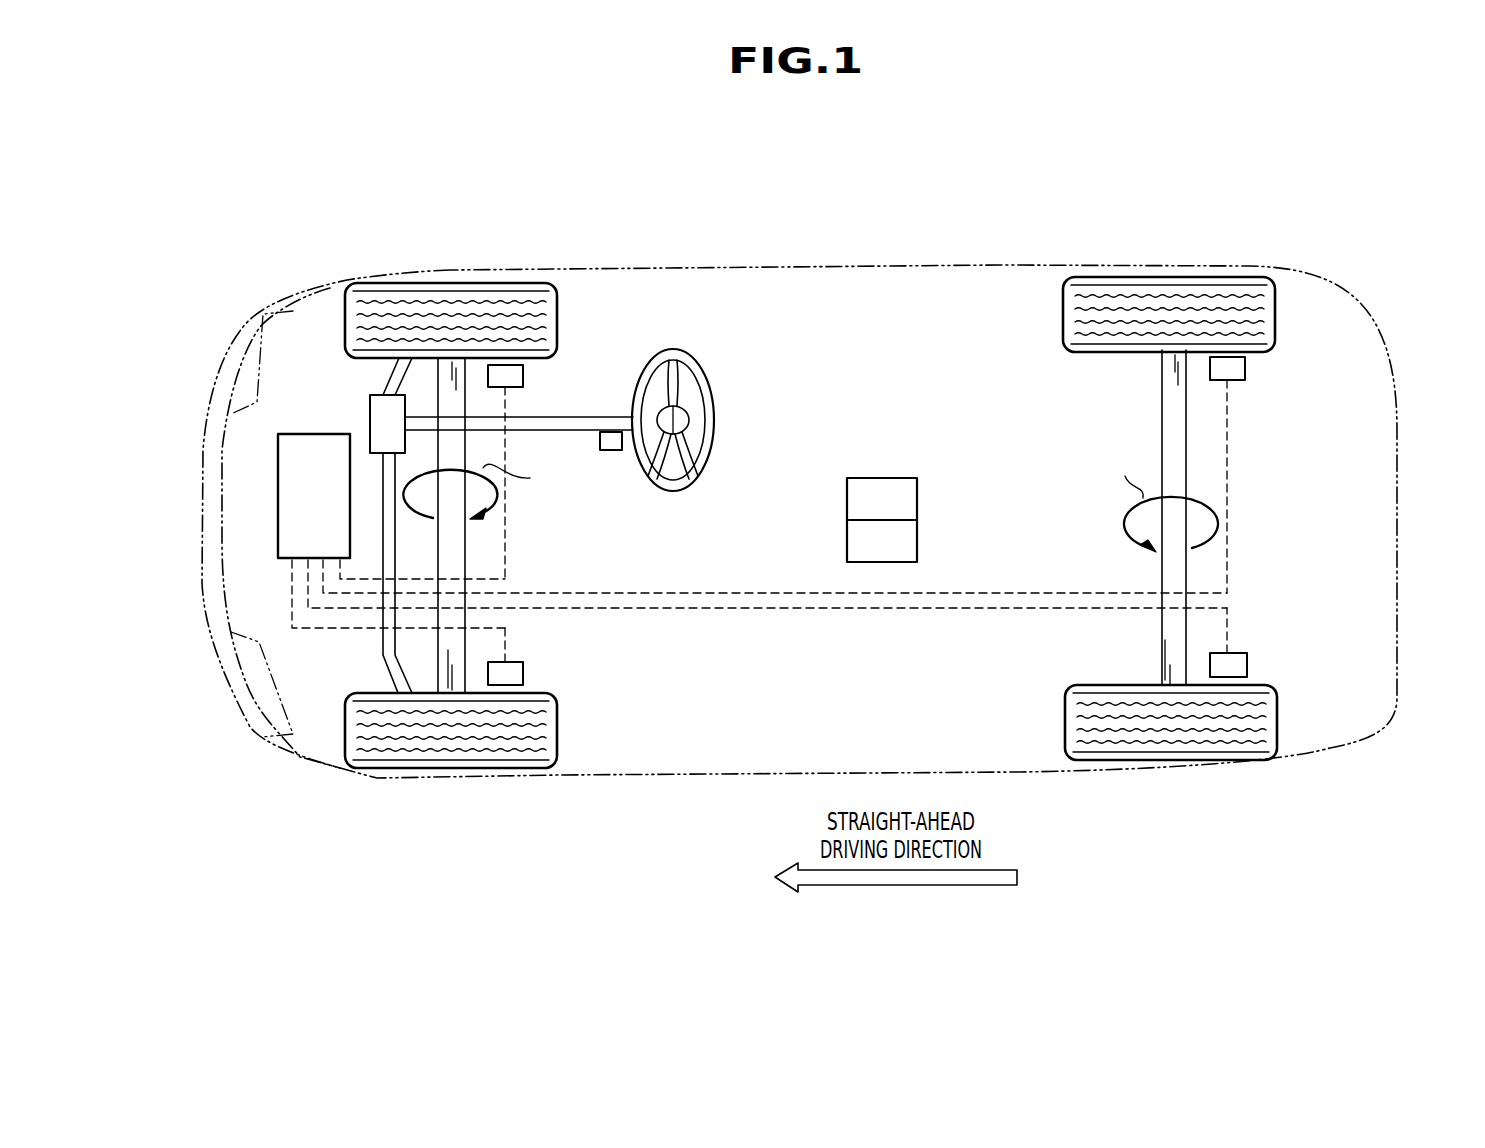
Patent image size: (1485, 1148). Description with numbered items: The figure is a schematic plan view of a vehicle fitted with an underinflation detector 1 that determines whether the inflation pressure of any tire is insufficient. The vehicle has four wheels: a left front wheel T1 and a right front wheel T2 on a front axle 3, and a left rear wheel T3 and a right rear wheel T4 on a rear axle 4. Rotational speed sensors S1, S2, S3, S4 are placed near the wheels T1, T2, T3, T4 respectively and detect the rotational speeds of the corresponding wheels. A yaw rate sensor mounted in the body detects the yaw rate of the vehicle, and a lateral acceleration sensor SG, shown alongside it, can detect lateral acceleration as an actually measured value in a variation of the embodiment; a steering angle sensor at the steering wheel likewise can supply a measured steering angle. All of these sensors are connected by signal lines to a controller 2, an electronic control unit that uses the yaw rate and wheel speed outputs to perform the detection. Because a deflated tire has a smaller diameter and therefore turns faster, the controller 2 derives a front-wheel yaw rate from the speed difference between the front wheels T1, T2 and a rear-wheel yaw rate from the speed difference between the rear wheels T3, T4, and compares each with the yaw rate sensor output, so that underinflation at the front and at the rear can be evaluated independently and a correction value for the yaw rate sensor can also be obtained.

The underinflation detector 1 is at (324, 353).
The controller 2 is at (316, 424).
The front axle / front wheel shaft 3 is at (455, 550).
The rear axle / rear wheel shaft 4 is at (1167, 403).
The left front wheel T1 is at (453, 768).
The right front wheel T2 is at (450, 283).
The left rear wheel T3 is at (1165, 760).
The right rear wheel T4 is at (1163, 277).
The rotational speed sensor S1 is at (513, 673).
The rotational speed sensor S2 is at (523, 377).
The rotational speed sensor S3 is at (1233, 658).
The rotational speed sensor S4 is at (1235, 367).
The lateral acceleration sensor SG is at (888, 543).